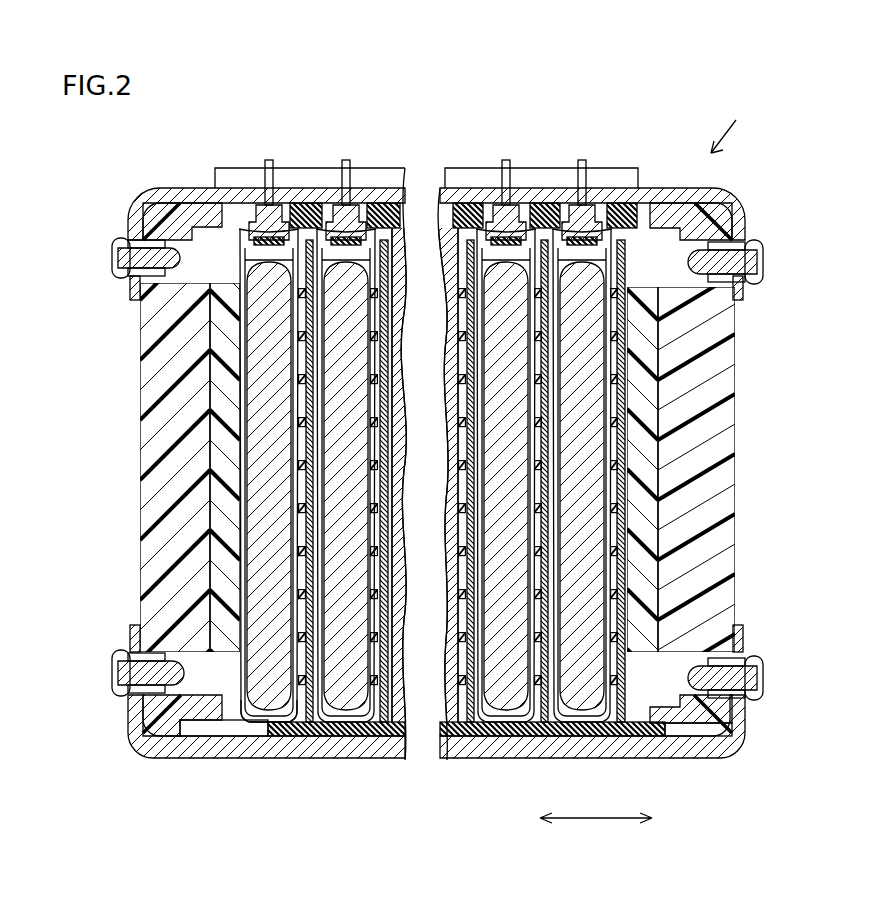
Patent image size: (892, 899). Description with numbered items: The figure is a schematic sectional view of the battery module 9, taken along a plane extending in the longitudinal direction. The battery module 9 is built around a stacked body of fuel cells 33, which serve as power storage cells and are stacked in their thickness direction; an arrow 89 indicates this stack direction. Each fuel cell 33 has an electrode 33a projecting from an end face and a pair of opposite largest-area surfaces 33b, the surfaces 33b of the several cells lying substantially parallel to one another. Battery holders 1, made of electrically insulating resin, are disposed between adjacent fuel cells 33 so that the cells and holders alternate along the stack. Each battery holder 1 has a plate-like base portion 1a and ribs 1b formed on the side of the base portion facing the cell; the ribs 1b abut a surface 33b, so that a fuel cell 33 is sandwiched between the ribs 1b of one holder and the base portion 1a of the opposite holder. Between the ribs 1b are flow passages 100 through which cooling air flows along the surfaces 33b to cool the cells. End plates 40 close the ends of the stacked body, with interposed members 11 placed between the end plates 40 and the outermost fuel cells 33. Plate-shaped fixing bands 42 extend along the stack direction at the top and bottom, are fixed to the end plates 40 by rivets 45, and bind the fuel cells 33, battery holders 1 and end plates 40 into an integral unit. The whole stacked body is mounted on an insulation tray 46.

The battery module 9 is at (741, 116).
The battery holder 1 is at (335, 735).
The base portion 1a is at (545, 690).
The ribs 1b is at (512, 690).
The interposed member 11 is at (212, 508).
The fuel cell 33 is at (320, 212).
The electrode 33a is at (346, 185).
The surfaces 33b is at (233, 700).
The end plate 40 is at (162, 431).
The fixing band 42 is at (233, 196).
The rivet 45 is at (121, 245).
The insulation tray 46 is at (360, 728).
The arrow 89 is at (595, 822).
The flow passage 100 is at (442, 300).